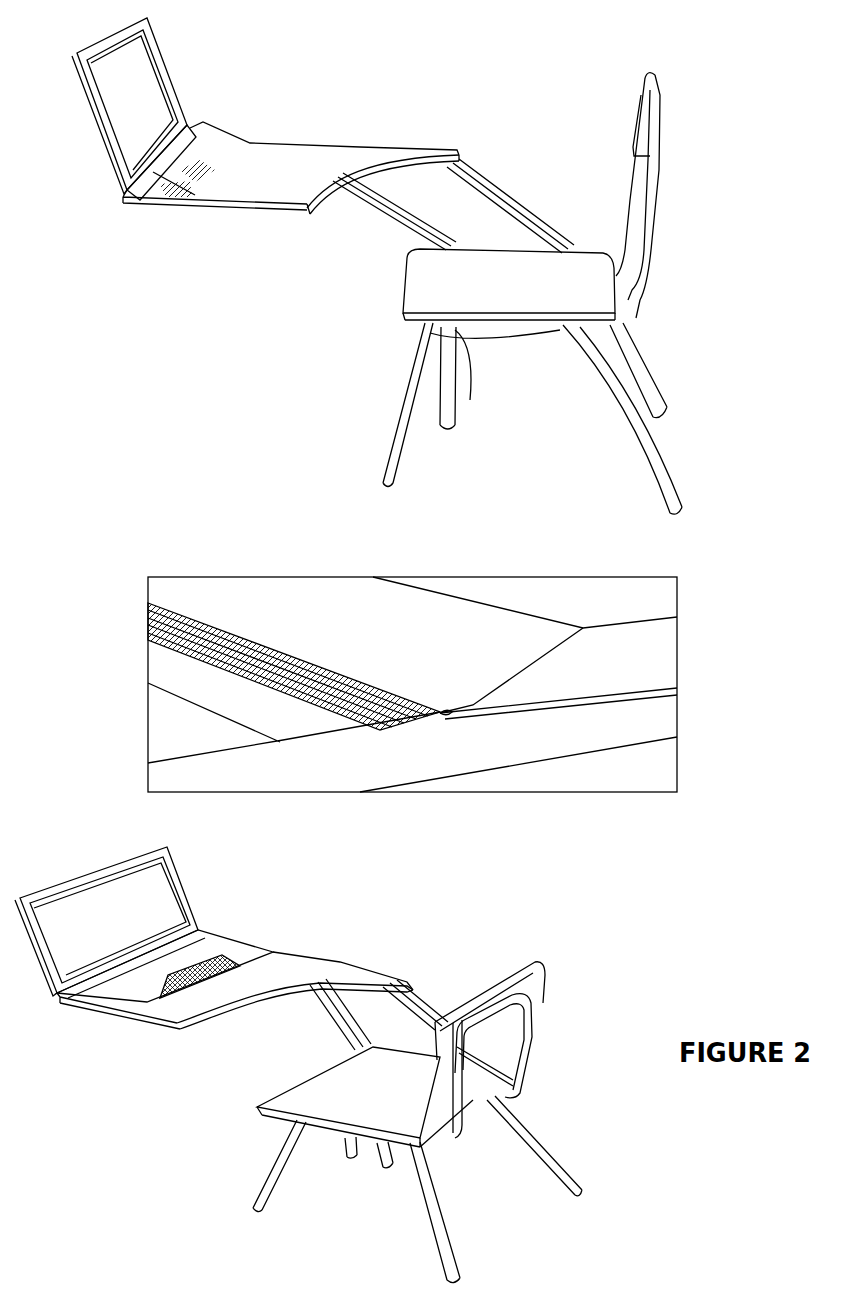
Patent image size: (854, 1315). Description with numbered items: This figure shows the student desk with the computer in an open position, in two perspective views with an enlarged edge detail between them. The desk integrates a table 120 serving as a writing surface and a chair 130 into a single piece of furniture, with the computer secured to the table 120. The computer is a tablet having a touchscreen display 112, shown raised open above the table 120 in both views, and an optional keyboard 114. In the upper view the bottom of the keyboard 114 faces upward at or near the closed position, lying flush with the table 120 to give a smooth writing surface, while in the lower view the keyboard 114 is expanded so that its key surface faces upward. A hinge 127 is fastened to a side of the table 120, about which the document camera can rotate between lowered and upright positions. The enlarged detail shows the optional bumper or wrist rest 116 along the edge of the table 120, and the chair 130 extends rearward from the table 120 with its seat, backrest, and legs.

The touchscreen display 112 is at (110, 98).
The keyboard 114 is at (216, 152).
The bumper or wrist rest 116 is at (445, 716).
The table 120 is at (238, 191).
The hinge 127 is at (351, 140).
The chair 130 is at (493, 303).